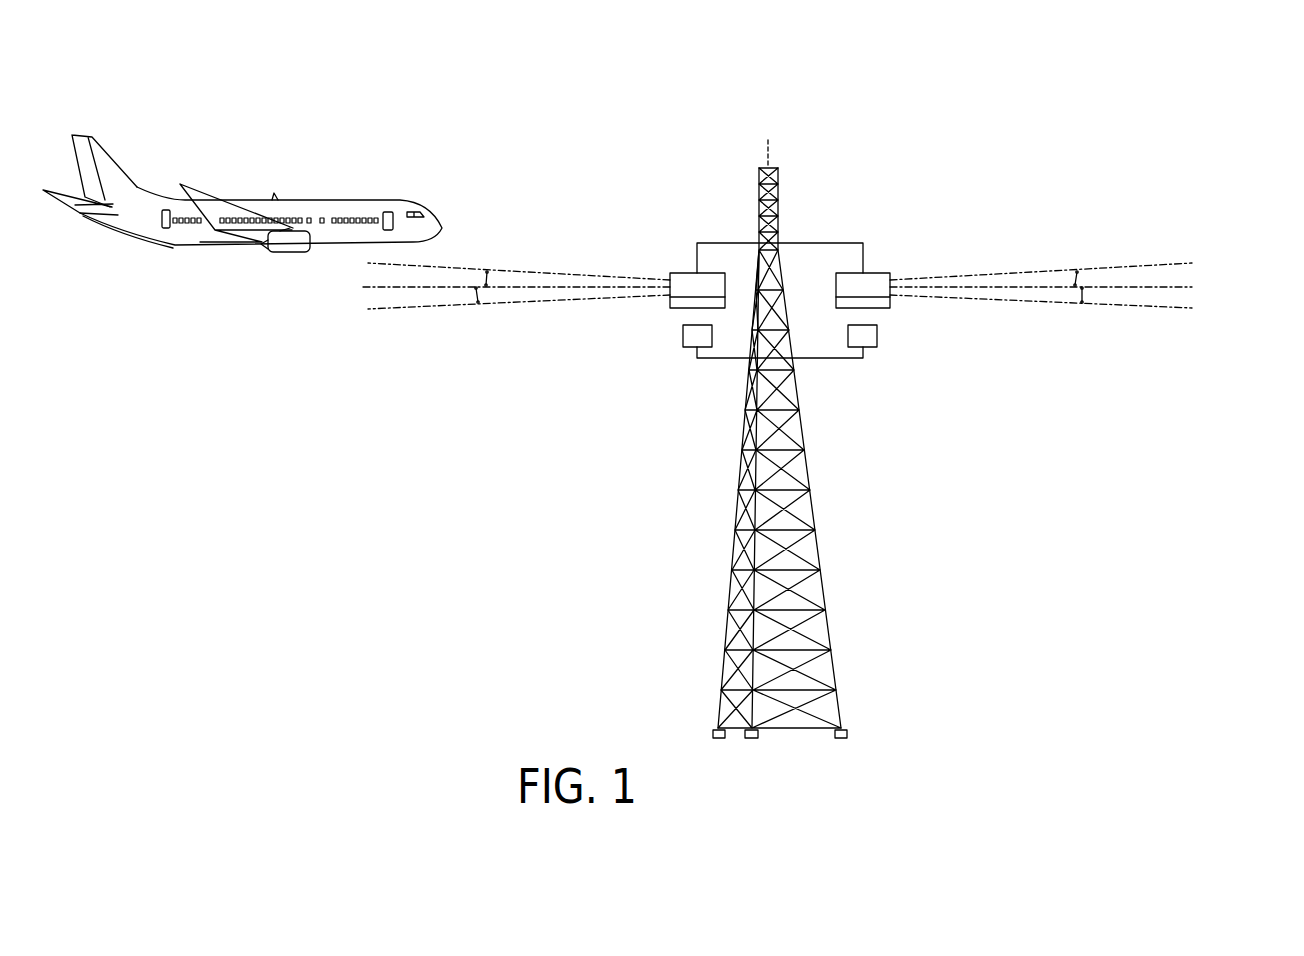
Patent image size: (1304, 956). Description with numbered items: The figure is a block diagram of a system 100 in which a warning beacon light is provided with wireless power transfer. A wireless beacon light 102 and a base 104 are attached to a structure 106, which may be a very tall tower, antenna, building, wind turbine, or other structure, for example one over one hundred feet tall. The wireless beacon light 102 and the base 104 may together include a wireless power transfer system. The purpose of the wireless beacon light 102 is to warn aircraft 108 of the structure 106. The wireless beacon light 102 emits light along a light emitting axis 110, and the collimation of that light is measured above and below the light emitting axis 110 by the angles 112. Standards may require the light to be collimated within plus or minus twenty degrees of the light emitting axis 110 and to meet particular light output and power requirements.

The system 100 is at (1022, 123).
The wireless beacon light 102 is at (680, 273).
The base 104 is at (683, 333).
The structure 106 is at (778, 198).
The aircraft 108 is at (353, 198).
The light emitting axis 110 is at (372, 292).
The angles 112 is at (487, 272).